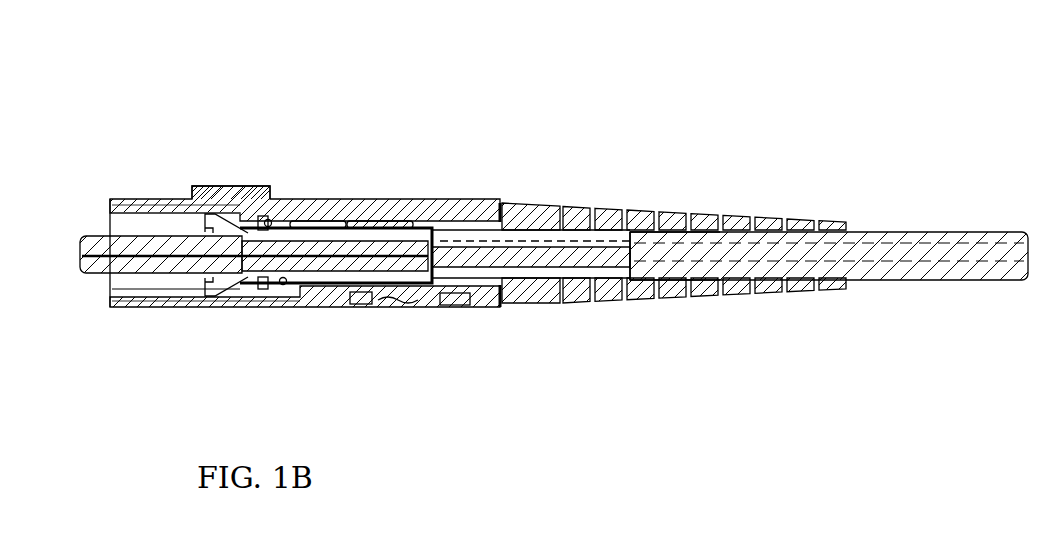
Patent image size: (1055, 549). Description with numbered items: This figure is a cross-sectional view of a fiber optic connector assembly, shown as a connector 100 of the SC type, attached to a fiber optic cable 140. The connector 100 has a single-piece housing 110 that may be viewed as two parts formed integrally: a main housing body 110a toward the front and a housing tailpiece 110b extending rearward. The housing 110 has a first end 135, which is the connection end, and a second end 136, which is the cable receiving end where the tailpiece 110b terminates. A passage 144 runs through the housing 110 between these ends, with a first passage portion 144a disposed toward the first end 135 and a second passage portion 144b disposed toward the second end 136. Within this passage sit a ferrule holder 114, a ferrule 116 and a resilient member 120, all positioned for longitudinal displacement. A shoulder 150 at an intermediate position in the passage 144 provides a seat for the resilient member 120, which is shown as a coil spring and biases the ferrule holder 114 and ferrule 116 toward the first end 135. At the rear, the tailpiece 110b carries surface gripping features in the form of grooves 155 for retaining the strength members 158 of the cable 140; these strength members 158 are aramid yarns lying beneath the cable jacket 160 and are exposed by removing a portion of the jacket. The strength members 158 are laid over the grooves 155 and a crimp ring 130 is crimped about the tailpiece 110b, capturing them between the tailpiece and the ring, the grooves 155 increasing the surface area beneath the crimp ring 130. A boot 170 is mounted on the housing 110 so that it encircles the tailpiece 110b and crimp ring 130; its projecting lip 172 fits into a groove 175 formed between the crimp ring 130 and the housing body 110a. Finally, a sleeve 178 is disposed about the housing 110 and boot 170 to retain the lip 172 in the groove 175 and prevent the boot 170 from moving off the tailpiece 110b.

The connector 100 is at (90, 138).
The housing 110 is at (312, 208).
The main housing body 110a is at (257, 211).
The housing tailpiece 110b is at (405, 222).
The ferrule holder 114 is at (250, 233).
The ferrule 116 is at (85, 238).
The resilient member 120 is at (244, 295).
The crimp ring 130 is at (361, 302).
The first end 135 is at (108, 300).
The second end 136 is at (462, 302).
The fiber optic cable 140 is at (903, 220).
The passage 144 is at (185, 223).
The first passage portion 144a is at (122, 222).
The second passage portion 144b is at (440, 285).
The shoulder 150 is at (288, 283).
The grooves 155 is at (399, 306).
The strength members 158 is at (532, 238).
The cable jacket 160 is at (660, 232).
The boot 170 is at (542, 212).
The projecting lip 172 is at (350, 222).
The groove 175 is at (323, 209).
The sleeve 178 is at (145, 310).